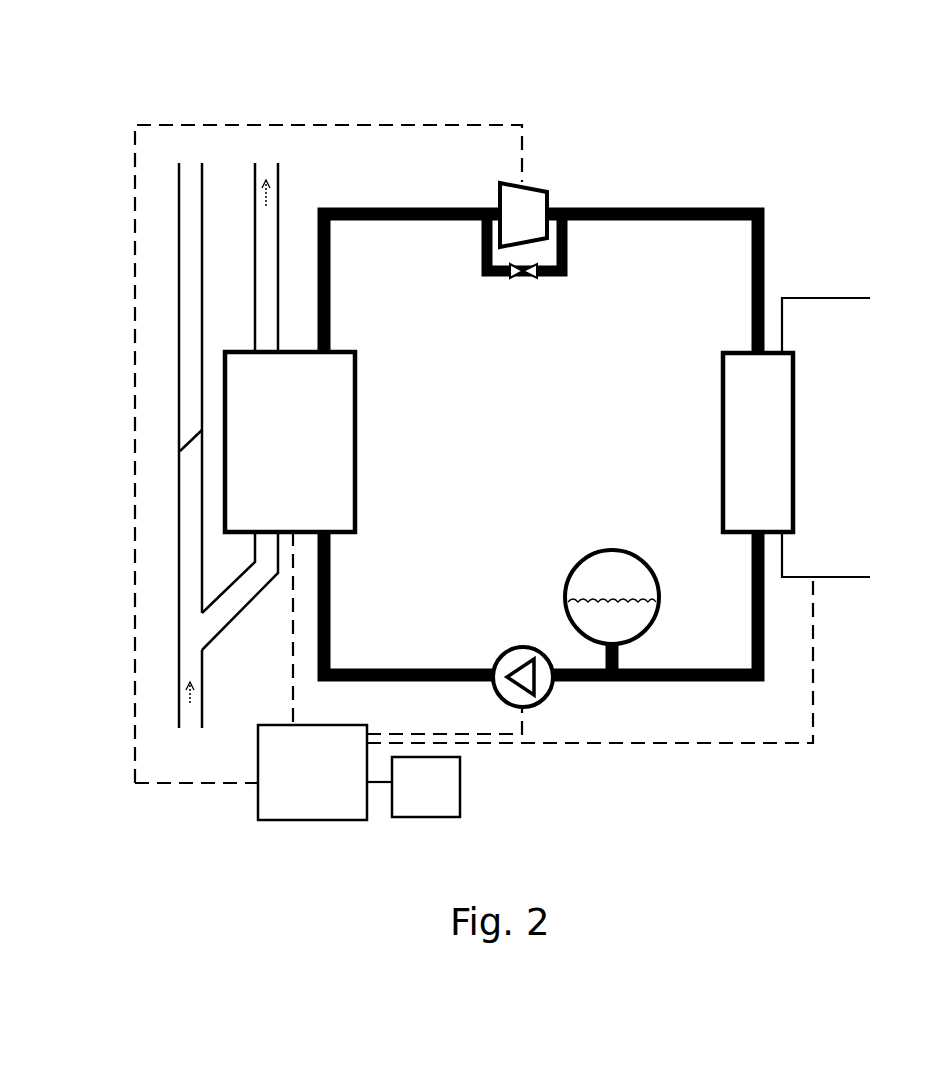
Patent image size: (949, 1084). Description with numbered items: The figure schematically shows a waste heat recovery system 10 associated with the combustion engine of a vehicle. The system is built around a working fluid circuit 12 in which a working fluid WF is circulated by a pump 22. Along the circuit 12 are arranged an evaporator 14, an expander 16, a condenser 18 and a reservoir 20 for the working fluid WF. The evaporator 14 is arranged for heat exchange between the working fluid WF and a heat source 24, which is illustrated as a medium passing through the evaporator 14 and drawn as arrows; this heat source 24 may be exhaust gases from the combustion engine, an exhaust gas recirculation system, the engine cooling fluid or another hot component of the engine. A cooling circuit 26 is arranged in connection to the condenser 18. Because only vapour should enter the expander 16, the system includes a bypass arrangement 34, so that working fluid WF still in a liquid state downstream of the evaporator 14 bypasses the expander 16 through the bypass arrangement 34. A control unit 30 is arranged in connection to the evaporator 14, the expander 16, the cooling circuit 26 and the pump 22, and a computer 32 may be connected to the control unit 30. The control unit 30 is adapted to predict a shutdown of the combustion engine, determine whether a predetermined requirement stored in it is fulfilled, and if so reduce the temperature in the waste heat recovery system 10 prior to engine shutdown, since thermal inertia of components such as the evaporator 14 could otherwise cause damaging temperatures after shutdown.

The waste heat recovery system 10 is at (702, 99).
The working fluid circuit 12 is at (683, 210).
The evaporator 14 is at (355, 437).
The expander 16 is at (540, 186).
The condenser 18 is at (723, 438).
The reservoir 20 is at (567, 575).
The pump 22 is at (498, 654).
The heat source 24 is at (192, 686).
The cooling circuit 26 is at (816, 298).
The control unit 30 is at (474, 472).
The computer 32 is at (426, 787).
The bypass arrangement 34 is at (500, 278).